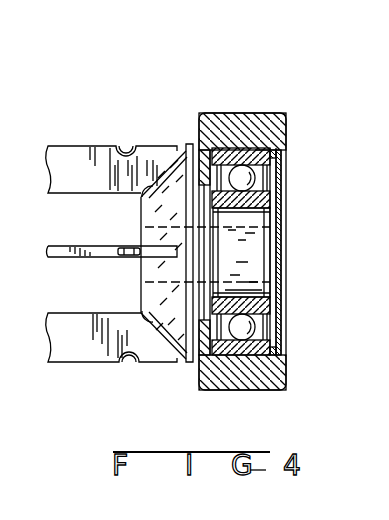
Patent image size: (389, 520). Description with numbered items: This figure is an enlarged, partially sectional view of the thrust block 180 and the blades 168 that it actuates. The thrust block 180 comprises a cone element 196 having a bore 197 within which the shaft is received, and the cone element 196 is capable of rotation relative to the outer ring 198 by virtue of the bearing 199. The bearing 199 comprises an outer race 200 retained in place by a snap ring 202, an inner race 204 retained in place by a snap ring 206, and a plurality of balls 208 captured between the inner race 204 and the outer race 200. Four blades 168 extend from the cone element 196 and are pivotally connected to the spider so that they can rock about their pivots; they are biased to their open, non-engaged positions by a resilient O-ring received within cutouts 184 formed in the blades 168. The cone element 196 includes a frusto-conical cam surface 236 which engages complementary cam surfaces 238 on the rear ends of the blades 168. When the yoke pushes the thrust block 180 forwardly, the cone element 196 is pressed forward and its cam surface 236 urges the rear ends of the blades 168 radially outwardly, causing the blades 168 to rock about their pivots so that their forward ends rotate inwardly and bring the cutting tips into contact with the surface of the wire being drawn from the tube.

The thrust block 180 is at (215, 93).
The blade 168 is at (70, 151).
The cutout 184 is at (127, 150).
The cam surface 238 is at (145, 198).
The frusto-conical cam surface 236 is at (162, 338).
The cone element 196 is at (192, 365).
The outer ring 198 is at (242, 113).
The bearing 199 is at (263, 141).
The snap ring 202 is at (284, 160).
The outer race 200 is at (283, 186).
The inner race 204 is at (268, 203).
The bore 197 is at (258, 229).
The snap ring 206 is at (285, 306).
The ball 208 is at (270, 325).